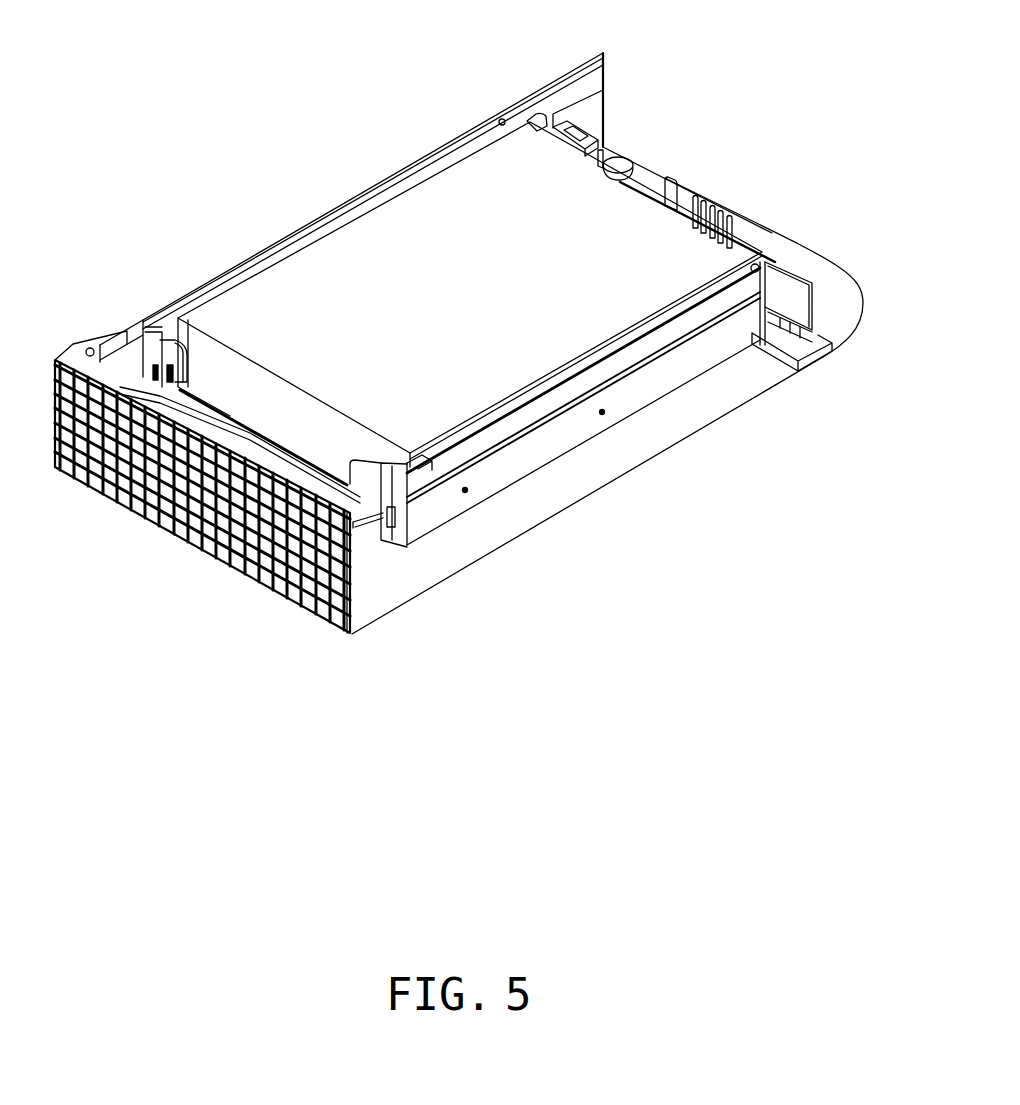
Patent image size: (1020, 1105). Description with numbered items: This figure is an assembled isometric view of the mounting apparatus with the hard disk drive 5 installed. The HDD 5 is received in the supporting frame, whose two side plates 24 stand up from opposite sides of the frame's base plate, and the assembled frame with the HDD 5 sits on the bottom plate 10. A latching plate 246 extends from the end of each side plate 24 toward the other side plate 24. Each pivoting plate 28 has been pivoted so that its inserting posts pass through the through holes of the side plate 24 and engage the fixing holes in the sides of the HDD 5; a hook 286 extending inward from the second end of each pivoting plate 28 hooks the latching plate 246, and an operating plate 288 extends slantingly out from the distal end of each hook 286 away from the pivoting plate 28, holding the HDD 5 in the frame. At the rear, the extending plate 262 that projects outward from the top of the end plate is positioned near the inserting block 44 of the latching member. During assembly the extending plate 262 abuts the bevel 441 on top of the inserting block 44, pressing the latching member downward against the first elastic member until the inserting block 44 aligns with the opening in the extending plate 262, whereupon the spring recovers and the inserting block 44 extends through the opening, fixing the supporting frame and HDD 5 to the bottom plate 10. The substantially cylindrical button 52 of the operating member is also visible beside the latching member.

The hard disk drive 5 is at (340, 272).
The bottom plate 10 is at (633, 450).
The side plate 24 is at (523, 398).
The pivoting plate 28 is at (667, 382).
The inserting block 44 is at (592, 140).
The button 52 is at (622, 162).
The latching plate 246 is at (420, 462).
The extending plate 262 is at (545, 128).
The hook 286 is at (382, 485).
The operating plate 288 is at (360, 480).
The bevel 441 is at (595, 140).